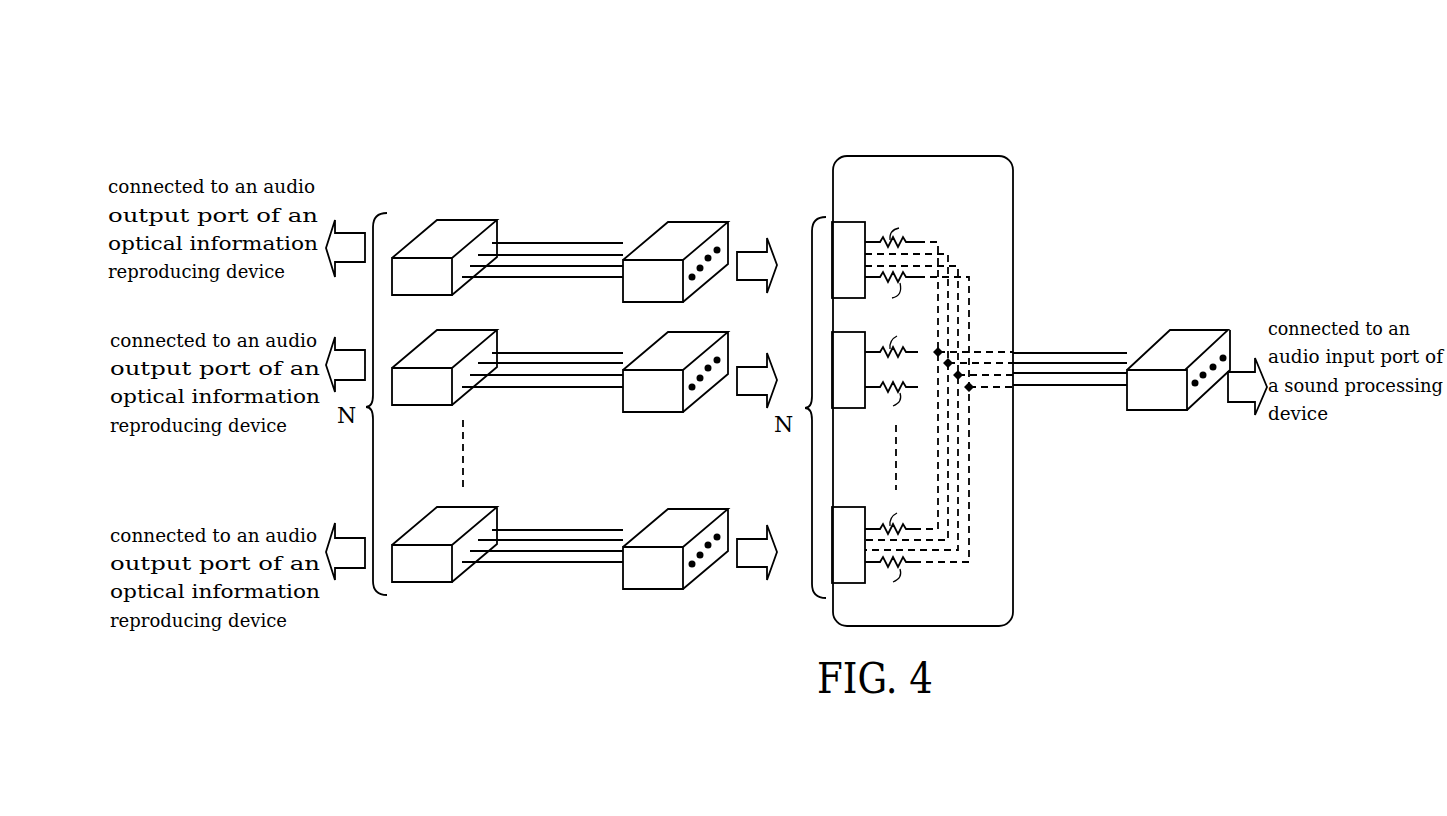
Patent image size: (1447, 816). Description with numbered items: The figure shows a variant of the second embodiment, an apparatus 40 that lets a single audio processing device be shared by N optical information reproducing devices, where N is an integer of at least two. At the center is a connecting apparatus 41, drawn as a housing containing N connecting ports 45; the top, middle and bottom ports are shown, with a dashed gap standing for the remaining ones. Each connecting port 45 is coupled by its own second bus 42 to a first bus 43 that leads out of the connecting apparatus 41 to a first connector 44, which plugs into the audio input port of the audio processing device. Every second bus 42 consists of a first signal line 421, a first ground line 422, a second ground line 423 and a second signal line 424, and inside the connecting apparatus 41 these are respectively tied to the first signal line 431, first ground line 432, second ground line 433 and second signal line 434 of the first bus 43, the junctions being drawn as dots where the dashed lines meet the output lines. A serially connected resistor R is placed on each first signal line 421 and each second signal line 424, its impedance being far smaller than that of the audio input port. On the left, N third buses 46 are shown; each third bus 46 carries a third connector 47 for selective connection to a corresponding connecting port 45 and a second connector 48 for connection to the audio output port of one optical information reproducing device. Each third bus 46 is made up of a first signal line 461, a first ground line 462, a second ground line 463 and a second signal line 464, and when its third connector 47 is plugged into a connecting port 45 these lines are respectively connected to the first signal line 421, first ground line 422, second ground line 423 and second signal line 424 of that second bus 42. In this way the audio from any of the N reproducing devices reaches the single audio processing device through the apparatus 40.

The apparatus 40 is at (913, 104).
The connecting apparatus 41 is at (963, 157).
The second bus 42 is at (980, 368).
The first signal line 421 is at (921, 244).
The first ground line 422 is at (927, 247).
The second ground line 423 is at (932, 249).
The second signal line 424 is at (937, 251).
The first bus 43 is at (1087, 314).
The first signal line 431 is at (1033, 353).
The first ground line 432 is at (1045, 363).
The second ground line 433 is at (1055, 373).
The second signal line 434 is at (1063, 385).
The first connector 44 is at (1203, 340).
The connecting port 45 is at (847, 230).
The third bus 46 is at (542, 401).
The first signal line 461 is at (517, 243).
The first ground line 462 is at (523, 255).
The second ground line 463 is at (532, 266).
The second signal line 464 is at (542, 434).
The third connector 47 is at (670, 222).
The second connector 48 is at (455, 227).